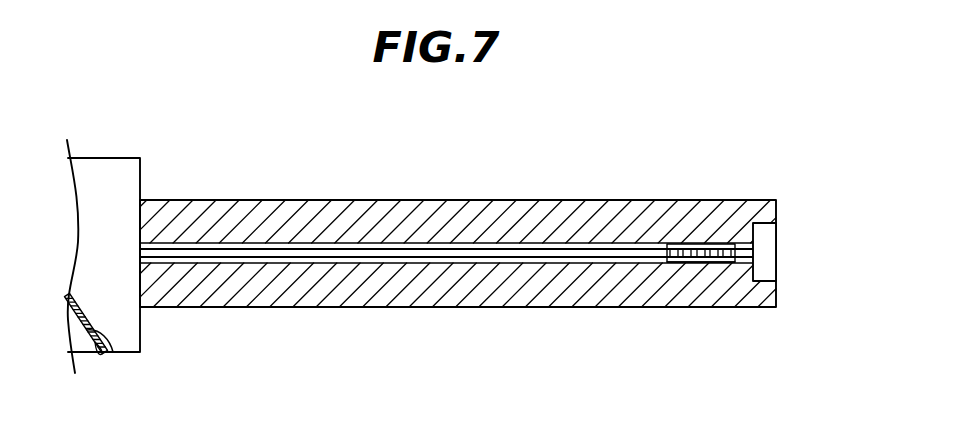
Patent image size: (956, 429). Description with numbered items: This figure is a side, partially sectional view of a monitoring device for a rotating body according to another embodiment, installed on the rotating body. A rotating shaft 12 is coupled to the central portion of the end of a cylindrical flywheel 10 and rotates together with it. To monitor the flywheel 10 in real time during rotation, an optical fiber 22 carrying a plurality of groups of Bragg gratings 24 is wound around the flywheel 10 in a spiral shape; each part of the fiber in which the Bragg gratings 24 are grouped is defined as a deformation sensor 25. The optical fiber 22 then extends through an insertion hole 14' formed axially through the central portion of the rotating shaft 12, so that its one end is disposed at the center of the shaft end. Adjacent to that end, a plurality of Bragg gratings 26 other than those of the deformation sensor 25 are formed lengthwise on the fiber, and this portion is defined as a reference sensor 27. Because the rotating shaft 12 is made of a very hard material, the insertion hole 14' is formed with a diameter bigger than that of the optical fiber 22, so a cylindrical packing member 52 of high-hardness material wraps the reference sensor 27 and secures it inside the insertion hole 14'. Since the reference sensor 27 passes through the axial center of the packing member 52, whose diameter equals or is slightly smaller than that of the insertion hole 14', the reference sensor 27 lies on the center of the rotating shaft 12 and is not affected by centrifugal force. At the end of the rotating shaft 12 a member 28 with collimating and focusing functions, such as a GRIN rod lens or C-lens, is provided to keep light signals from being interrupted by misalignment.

The flywheel 10 is at (132, 333).
The rotating shaft 12 is at (480, 300).
The insertion hole 14' is at (446, 318).
The optical fiber 22 is at (575, 253).
The Bragg gratings 24 is at (87, 335).
The deformation sensor 25 is at (83, 300).
The Bragg gratings 26 is at (710, 247).
The reference sensor 27 is at (697, 264).
The member 28 is at (765, 252).
The packing member 52 is at (727, 240).